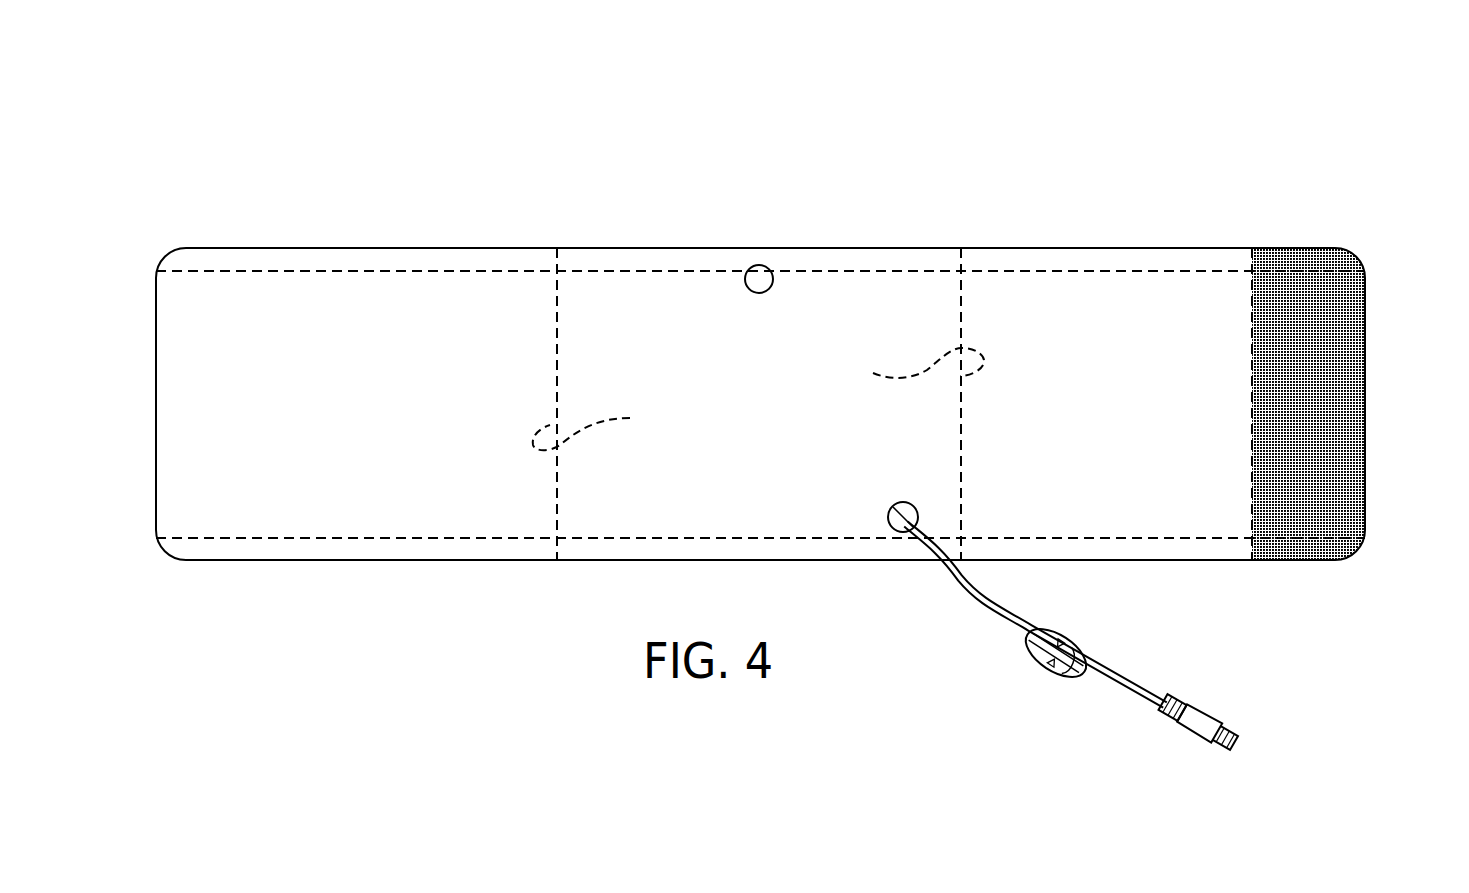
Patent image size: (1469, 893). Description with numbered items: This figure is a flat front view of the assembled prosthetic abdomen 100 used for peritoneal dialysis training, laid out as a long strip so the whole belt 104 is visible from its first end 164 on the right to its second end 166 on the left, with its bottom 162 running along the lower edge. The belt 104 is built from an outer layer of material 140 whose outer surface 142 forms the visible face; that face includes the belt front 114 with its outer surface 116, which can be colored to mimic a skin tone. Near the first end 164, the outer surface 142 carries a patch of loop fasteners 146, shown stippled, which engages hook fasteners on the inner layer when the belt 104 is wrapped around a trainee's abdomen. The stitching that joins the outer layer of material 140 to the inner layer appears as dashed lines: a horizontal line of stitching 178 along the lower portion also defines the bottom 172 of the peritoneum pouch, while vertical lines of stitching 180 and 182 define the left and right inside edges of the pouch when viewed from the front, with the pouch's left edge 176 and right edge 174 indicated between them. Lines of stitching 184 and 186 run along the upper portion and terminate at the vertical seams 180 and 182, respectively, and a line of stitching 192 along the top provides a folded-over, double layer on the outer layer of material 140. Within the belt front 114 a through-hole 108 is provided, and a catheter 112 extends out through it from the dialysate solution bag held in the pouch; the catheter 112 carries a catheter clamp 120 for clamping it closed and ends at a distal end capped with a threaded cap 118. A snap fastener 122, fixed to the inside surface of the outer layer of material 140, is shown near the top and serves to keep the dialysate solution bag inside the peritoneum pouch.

The prosthetic abdomen 100 is at (672, 166).
The belt 104 is at (1180, 250).
The through-hole 108 is at (889, 521).
The catheter 112 is at (973, 597).
The belt front 114 is at (672, 380).
The outer surface 116 is at (528, 312).
The threaded cap 118 is at (1202, 712).
The catheter clamp 120 is at (1052, 630).
The snap fastener 122 is at (752, 265).
The outer layer of material 140 is at (228, 302).
The outer surface 142 is at (318, 315).
The patch of loop fasteners 146 is at (1310, 296).
The bottom 162 is at (473, 562).
The first end 164 is at (1365, 348).
The second end 166 is at (155, 348).
The bottom 172 is at (703, 537).
The right edge 174 is at (902, 370).
The left edge 176 is at (610, 425).
The line of stitching 178 is at (607, 538).
The vertical line of stitching 180 is at (557, 385).
The vertical line of stitching 182 is at (963, 423).
The line of stitching 184 is at (422, 272).
The line of stitching 186 is at (1110, 272).
The line of stitching 192 is at (850, 272).